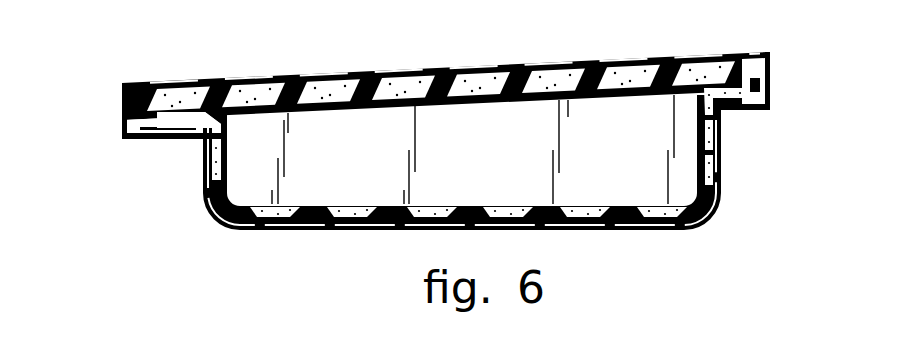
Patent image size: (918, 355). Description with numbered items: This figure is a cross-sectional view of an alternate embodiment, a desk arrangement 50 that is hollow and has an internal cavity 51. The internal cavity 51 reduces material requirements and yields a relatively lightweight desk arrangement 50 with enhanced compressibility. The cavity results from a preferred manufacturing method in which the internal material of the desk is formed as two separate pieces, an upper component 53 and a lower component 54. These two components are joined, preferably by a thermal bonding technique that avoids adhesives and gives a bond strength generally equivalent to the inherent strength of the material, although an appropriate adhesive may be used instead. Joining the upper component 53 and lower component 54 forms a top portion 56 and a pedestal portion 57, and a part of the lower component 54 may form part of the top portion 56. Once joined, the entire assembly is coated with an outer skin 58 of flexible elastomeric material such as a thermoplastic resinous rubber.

The desk arrangement 50 is at (132, 83).
The internal cavity 51 is at (323, 127).
The upper component 53 is at (643, 72).
The lower component 54 is at (710, 163).
The top portion 56 is at (766, 72).
The pedestal portion 57 is at (713, 208).
The outer skin 58 is at (446, 69).